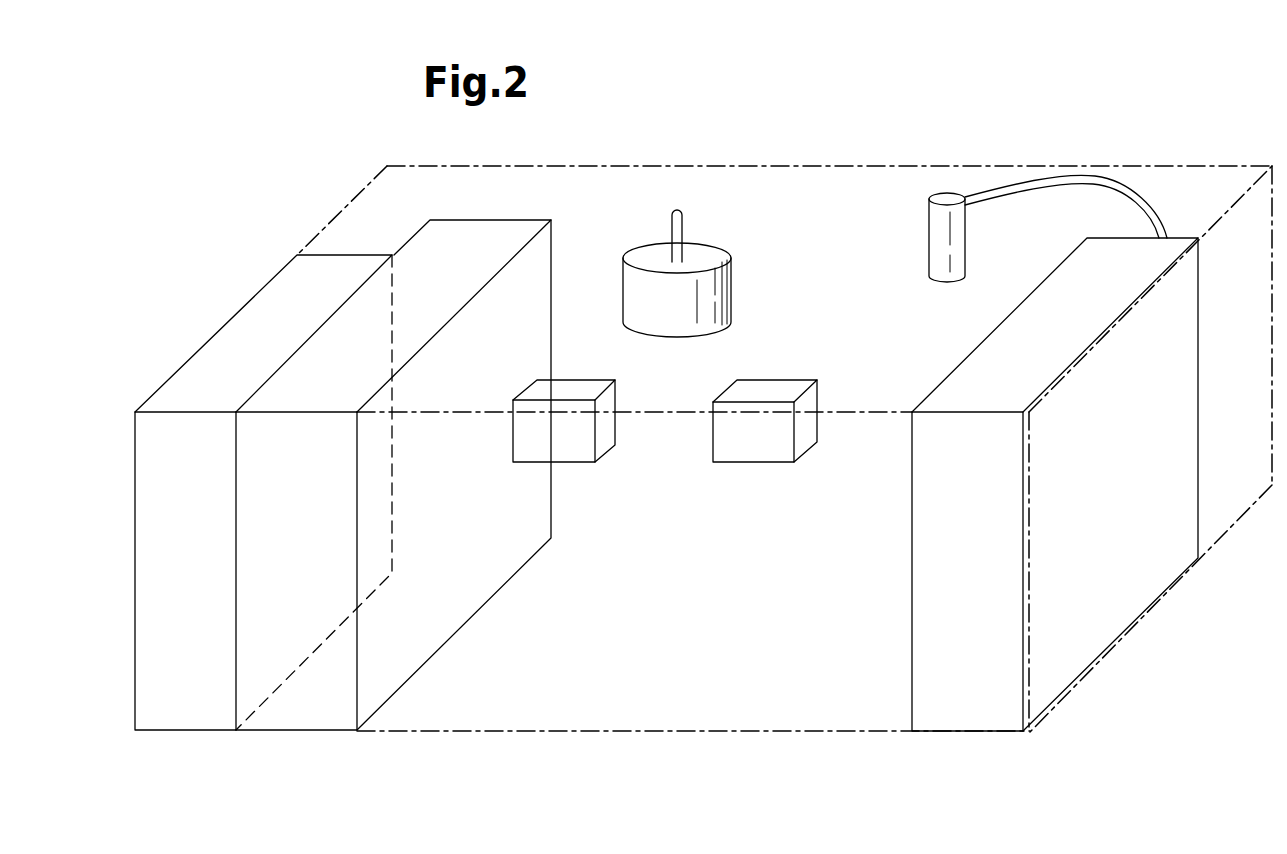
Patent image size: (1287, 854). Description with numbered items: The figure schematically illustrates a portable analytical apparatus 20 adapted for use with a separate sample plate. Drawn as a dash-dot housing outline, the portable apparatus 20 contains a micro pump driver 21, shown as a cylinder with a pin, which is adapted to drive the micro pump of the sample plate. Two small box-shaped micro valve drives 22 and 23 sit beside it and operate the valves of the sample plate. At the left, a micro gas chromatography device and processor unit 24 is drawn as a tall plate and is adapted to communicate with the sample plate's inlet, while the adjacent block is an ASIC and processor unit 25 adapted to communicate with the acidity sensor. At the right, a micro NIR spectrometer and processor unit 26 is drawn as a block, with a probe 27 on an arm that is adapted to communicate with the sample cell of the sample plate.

The portable apparatus 20 is at (324, 221).
The micro pump driver 21 is at (701, 255).
The micro valve drive 22 is at (565, 388).
The micro valve drive 23 is at (759, 388).
The micro gas chromatography device and processor unit 24 is at (466, 538).
The ASIC and processor unit 25 is at (177, 685).
The micro NIR spectrometer and processor unit 26 is at (1093, 541).
The probe 27 is at (938, 198).